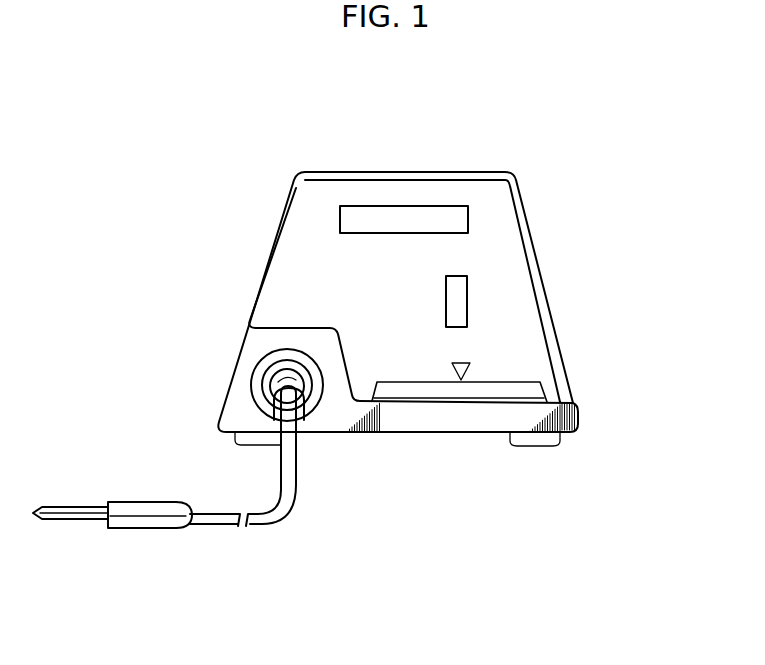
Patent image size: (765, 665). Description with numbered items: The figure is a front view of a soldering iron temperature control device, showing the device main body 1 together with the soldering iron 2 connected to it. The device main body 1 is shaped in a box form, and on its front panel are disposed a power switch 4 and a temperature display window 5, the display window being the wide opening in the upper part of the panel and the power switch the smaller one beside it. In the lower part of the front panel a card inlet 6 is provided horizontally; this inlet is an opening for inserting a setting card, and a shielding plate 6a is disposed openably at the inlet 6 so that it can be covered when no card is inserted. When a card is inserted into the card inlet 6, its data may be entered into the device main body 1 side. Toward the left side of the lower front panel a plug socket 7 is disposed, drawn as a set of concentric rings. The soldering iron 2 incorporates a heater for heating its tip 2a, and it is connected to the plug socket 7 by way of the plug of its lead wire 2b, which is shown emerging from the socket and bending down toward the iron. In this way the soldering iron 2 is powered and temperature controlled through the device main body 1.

The device main body 1 is at (193, 291).
The soldering iron 2 is at (150, 502).
The tip 2a is at (73, 507).
The lead wire 2b is at (222, 525).
The power switch 4 is at (460, 300).
The temperature display window 5 is at (468, 222).
The card inlet 6 is at (540, 362).
The shielding plate 6a is at (437, 392).
The plug socket 7 is at (258, 382).